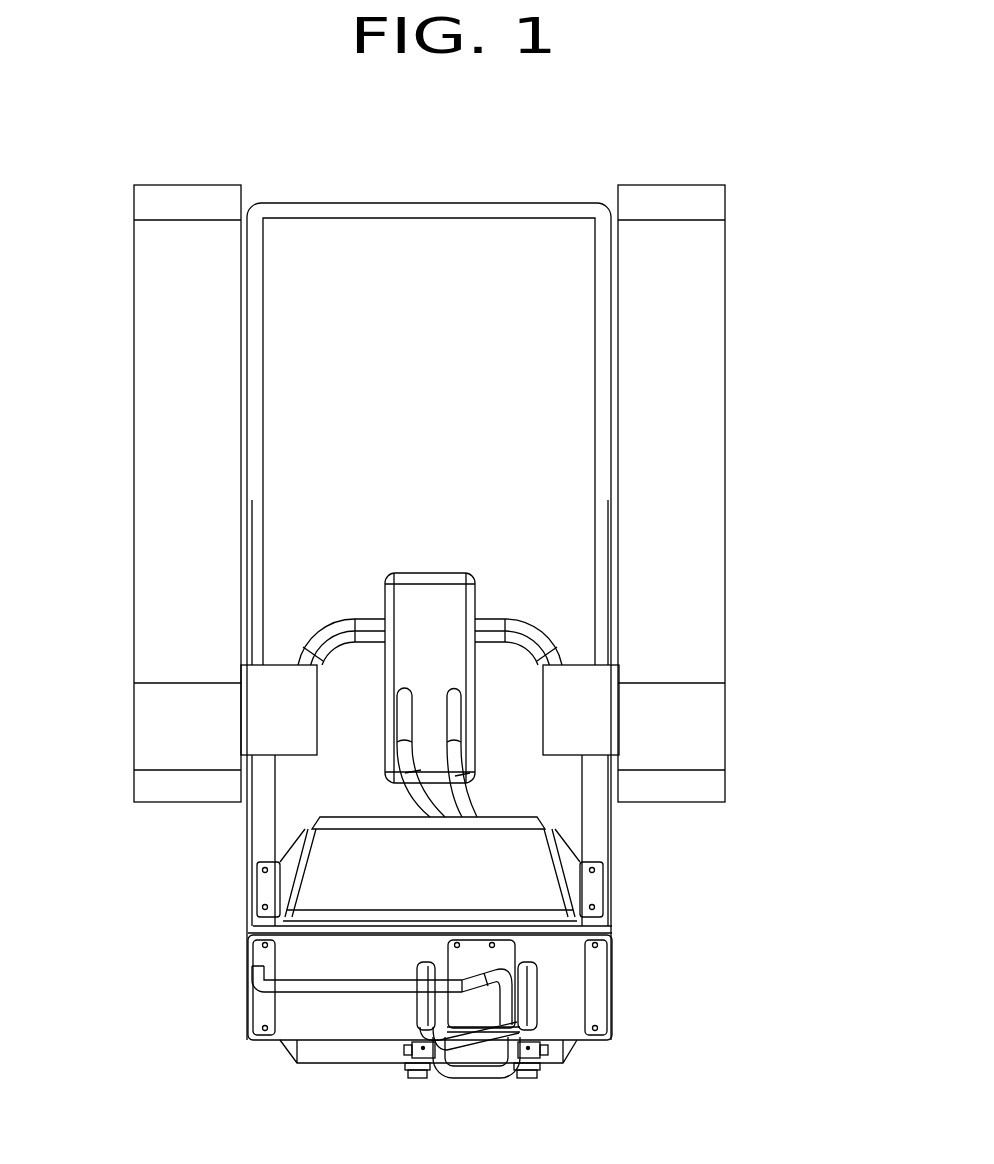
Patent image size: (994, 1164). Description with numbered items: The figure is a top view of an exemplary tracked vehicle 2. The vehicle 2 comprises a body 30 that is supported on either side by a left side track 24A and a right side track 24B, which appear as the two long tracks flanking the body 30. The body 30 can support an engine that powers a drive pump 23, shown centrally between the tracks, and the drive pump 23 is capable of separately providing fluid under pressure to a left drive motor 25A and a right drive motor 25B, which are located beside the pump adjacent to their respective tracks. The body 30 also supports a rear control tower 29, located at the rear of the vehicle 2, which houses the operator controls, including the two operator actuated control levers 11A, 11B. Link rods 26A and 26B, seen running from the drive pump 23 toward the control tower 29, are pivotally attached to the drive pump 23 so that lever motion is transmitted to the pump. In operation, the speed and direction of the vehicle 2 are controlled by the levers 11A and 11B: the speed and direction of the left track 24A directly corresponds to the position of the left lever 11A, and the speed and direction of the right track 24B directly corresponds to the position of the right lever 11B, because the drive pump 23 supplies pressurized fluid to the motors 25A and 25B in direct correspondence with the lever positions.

The tracked vehicle 2 is at (435, 202).
The body 30 is at (414, 437).
The left side track 24A is at (181, 432).
The right side track 24B is at (671, 404).
The left drive motor 25A is at (265, 707).
The right drive motor 25B is at (600, 703).
The drive pump 23 is at (438, 627).
The link rod 26A is at (437, 808).
The link rod 26B is at (473, 806).
The rear control tower 29 is at (598, 843).
The left lever 11A is at (423, 1002).
The right lever 11B is at (527, 1000).